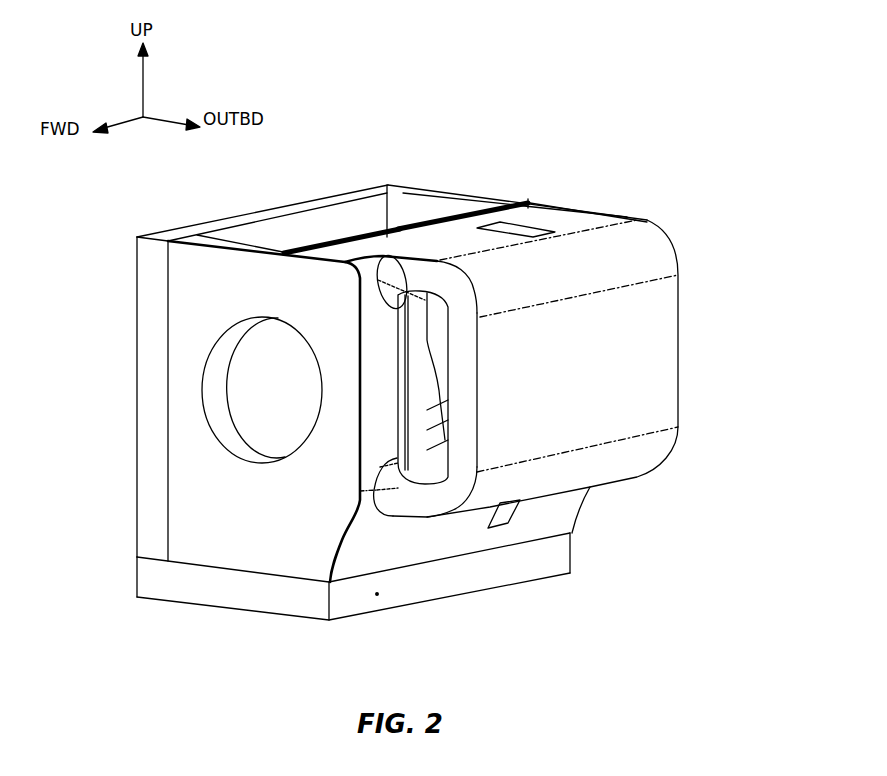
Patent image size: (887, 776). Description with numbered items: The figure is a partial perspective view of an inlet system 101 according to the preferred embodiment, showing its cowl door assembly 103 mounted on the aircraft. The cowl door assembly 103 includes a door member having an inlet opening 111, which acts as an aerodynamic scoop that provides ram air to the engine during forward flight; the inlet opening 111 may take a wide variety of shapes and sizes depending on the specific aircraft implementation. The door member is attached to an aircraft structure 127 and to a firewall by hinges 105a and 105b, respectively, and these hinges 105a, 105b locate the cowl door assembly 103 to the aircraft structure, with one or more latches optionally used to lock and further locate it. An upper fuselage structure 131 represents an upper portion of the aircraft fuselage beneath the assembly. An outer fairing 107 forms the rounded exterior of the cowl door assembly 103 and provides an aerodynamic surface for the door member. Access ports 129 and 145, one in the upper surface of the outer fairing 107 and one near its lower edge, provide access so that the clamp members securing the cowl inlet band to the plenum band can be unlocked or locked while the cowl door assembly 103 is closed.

The inlet system 101 is at (529, 86).
The cowl door assembly 103 is at (638, 155).
The hinge 105a is at (317, 247).
The hinge 105b is at (503, 203).
The outer fairing 107 is at (620, 287).
The inlet opening 111 is at (450, 407).
The aircraft structure 127 is at (167, 530).
The access port 129 is at (517, 513).
The upper fuselage structure 131 is at (490, 590).
The access port 145 is at (537, 224).